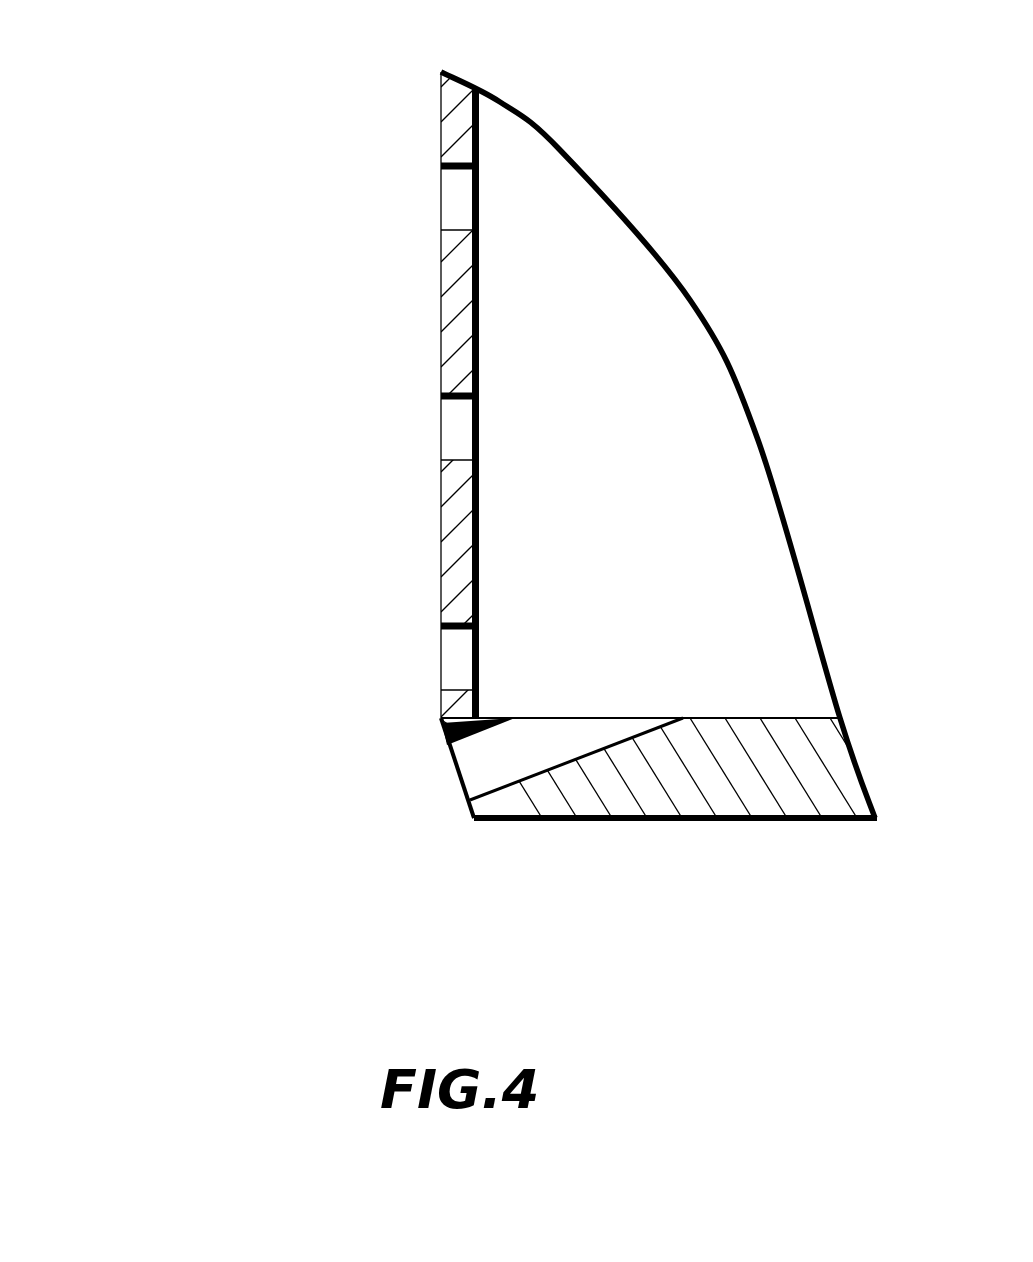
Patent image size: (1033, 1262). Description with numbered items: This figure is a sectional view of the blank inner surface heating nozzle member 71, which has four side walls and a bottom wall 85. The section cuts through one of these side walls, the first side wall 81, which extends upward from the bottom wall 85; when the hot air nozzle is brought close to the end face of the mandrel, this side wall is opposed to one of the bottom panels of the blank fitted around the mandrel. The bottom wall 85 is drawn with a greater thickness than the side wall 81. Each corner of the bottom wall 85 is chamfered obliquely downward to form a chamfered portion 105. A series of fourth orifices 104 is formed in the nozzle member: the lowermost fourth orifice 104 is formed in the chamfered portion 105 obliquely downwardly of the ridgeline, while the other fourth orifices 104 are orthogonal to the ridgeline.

The inner surface heating nozzle member 71 is at (323, 520).
The first side wall 81 is at (440, 122).
The fourth orifice 104 is at (441, 420).
The chamfered portion 105 is at (442, 735).
The bottom wall 85 is at (716, 820).